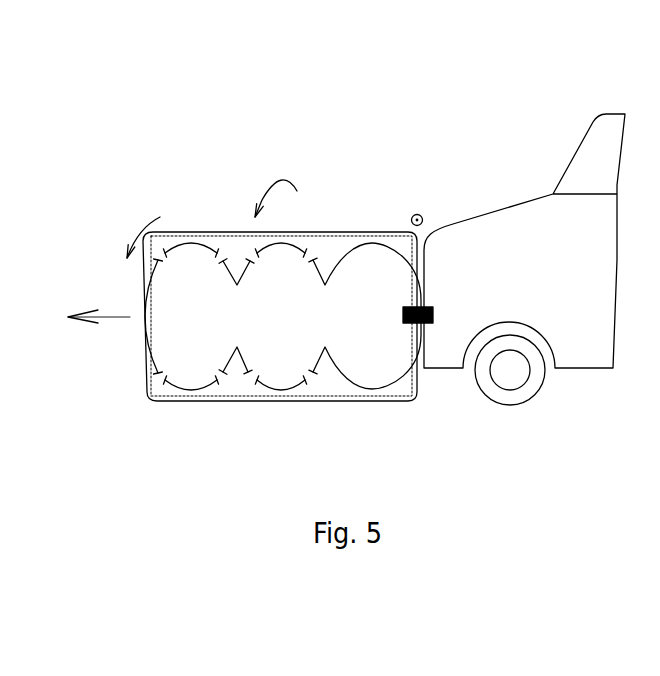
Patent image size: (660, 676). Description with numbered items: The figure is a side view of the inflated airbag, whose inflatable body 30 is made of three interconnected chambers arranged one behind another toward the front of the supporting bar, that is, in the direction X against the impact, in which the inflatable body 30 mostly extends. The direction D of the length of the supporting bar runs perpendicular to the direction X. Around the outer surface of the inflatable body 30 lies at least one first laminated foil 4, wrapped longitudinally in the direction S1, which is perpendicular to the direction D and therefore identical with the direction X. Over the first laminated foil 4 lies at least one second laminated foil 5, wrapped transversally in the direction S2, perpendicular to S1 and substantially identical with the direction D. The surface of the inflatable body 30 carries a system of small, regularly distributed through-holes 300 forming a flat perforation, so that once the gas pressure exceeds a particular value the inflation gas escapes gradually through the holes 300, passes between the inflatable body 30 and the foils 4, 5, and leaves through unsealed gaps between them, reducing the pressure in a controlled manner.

The second laminated foil 5 is at (305, 232).
The first laminated foil 4 is at (340, 233).
The inflatable body 30 is at (167, 283).
The through-holes 300 is at (249, 252).
The direction of the length of the supporting bar D is at (423, 203).
The wrapping direction of the first laminated foil S1 is at (136, 228).
The wrapping direction of the second laminated foil S2 is at (267, 184).
The direction against the impact X is at (99, 299).